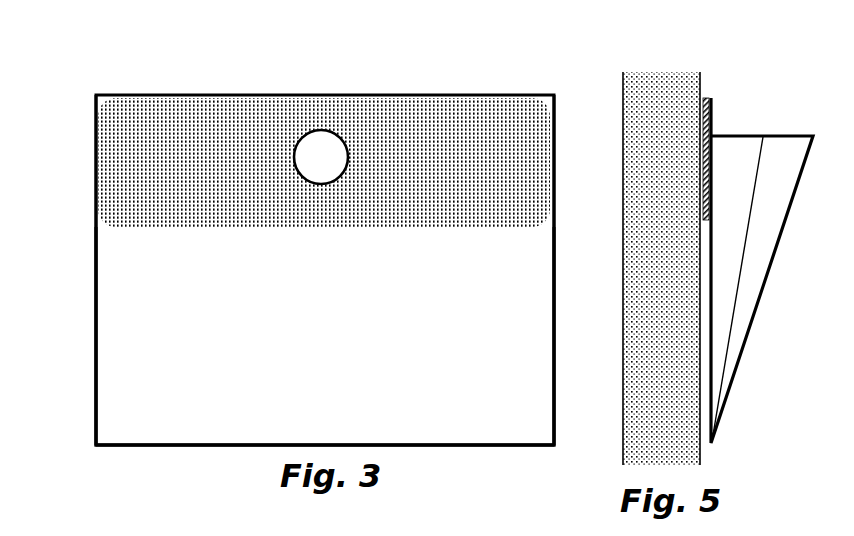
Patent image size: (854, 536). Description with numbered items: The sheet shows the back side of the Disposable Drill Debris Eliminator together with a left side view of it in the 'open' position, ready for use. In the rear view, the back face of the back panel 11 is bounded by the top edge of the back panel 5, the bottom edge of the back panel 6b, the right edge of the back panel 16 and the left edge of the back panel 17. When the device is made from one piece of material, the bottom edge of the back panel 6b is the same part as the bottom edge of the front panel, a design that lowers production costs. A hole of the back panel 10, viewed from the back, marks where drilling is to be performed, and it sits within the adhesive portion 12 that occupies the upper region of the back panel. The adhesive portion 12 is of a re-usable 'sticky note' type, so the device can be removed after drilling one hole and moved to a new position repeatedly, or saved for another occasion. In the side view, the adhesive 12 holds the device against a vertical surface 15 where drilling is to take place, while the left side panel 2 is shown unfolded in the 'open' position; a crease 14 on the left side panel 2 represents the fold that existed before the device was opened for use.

In FIG. 5, the left side panel 2 is at (737, 173).
In FIG. 3, the top edge of the back panel 5 is at (347, 94).
In FIG. 3, the bottom edge of the back panel 6b is at (205, 447).
In FIG. 3, the hole of the back panel 10 is at (318, 152).
In FIG. 3, the back face of the back panel 11 is at (153, 297).
In FIG. 3, the adhesive portion 12 is at (440, 160).
In FIG. 5, the adhesive portion 12 is at (708, 93).
In FIG. 5, the crease 14 is at (739, 296).
In FIG. 5, the vertical surface 15 is at (640, 403).
In FIG. 3, the right edge of the back panel 16 is at (94, 253).
In FIG. 3, the left edge of the back panel 17 is at (556, 370).